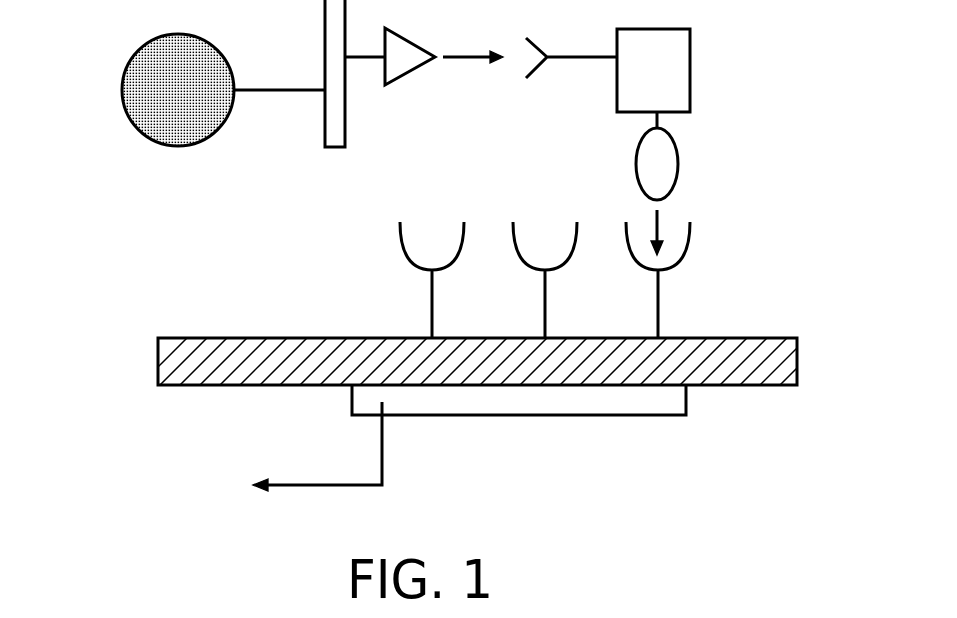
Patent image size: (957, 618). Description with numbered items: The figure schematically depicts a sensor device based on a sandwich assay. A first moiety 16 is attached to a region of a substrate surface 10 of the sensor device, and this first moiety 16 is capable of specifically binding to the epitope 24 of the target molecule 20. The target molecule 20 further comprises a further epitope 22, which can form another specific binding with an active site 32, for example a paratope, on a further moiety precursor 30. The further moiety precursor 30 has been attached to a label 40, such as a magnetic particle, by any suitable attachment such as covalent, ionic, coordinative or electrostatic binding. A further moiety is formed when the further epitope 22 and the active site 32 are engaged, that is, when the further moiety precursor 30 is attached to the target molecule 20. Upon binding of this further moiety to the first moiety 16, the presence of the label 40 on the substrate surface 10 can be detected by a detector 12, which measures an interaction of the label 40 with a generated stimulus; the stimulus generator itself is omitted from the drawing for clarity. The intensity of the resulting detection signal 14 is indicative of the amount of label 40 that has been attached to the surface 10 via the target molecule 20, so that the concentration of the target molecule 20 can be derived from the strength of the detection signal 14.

The substrate surface 10 is at (757, 378).
The detector 12 is at (589, 408).
The detection signal 14 is at (383, 444).
The first moiety 16 is at (680, 250).
The target molecule 20 is at (683, 70).
The further epitope 22 is at (538, 76).
The epitope 24 is at (674, 164).
The further moiety precursor 30 is at (335, 147).
The active site 32 is at (408, 77).
The label 40 is at (122, 90).